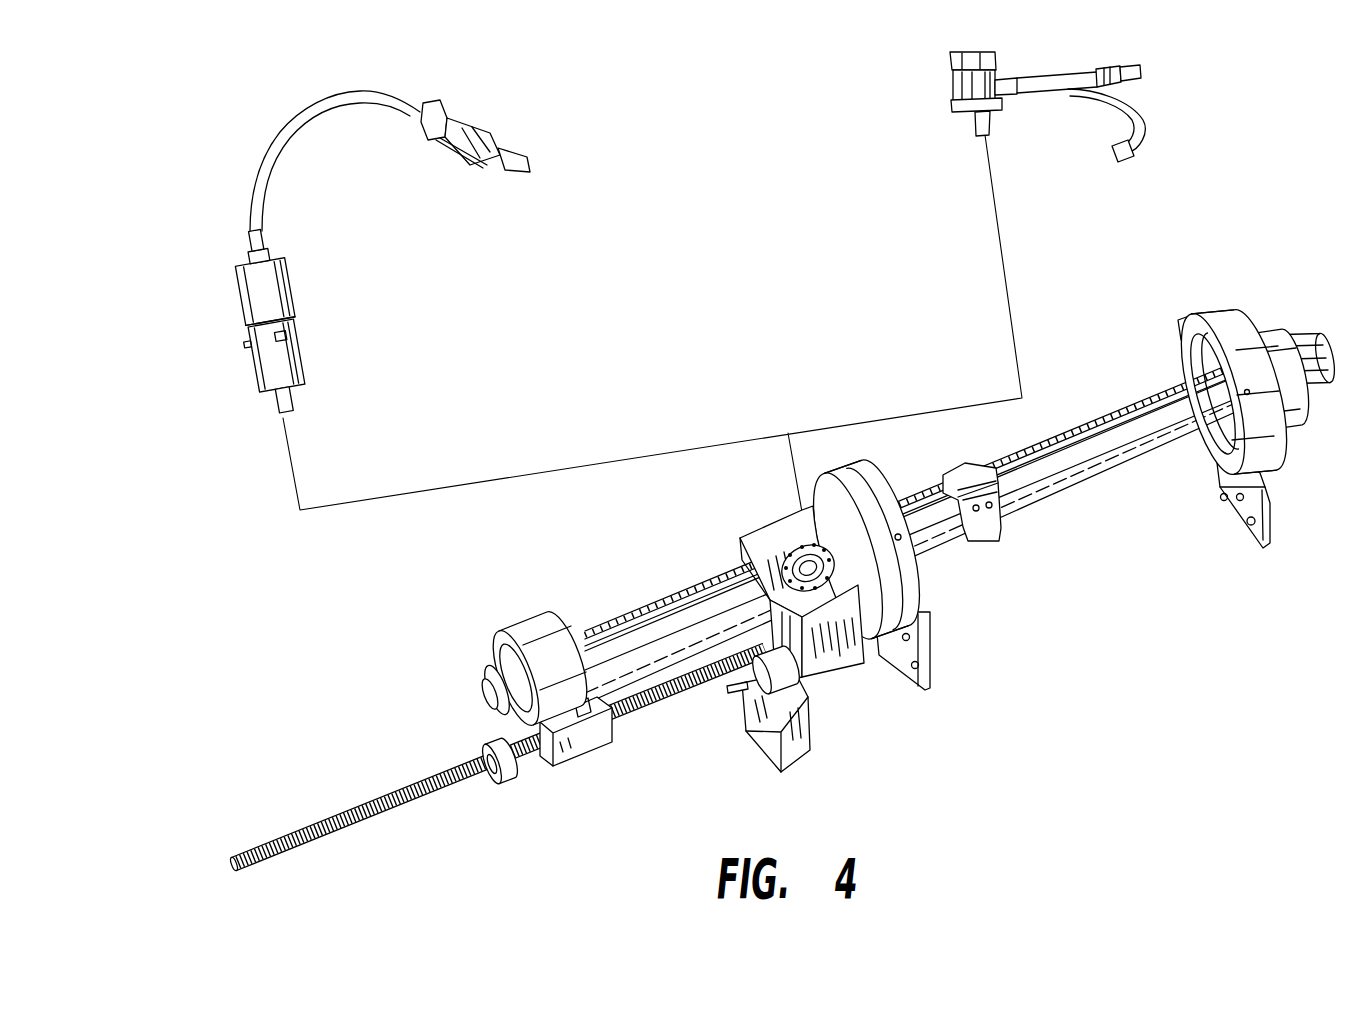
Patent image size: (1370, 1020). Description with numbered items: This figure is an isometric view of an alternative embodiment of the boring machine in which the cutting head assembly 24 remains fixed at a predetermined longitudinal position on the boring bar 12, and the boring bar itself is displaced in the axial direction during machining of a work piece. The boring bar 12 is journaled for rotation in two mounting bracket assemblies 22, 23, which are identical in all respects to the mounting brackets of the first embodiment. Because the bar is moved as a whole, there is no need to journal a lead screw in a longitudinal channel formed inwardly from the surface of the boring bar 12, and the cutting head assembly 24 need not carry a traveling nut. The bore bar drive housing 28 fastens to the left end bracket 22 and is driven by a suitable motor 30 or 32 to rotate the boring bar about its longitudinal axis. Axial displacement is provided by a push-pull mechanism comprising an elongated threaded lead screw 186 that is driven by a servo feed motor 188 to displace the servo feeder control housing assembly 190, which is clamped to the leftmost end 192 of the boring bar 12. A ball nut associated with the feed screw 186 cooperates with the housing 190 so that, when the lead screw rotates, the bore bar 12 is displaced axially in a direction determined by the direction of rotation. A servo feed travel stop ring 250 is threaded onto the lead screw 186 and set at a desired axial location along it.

The boring bar 12 is at (1308, 360).
The mounting bracket assembly 22 is at (868, 488).
The mounting bracket assembly 23 is at (1218, 328).
The cutting head assembly 24 is at (1000, 530).
The bore bar drive housing 28 is at (825, 668).
The motor 30 is at (290, 296).
The motor 32 is at (952, 55).
The threaded lead screw 186 is at (372, 820).
The servo feed motor 188 is at (763, 737).
The servo feeder control housing assembly 190 is at (520, 630).
The leftmost end of the boring bar 192 is at (580, 637).
The servo feed travel stop ring 250 is at (483, 743).